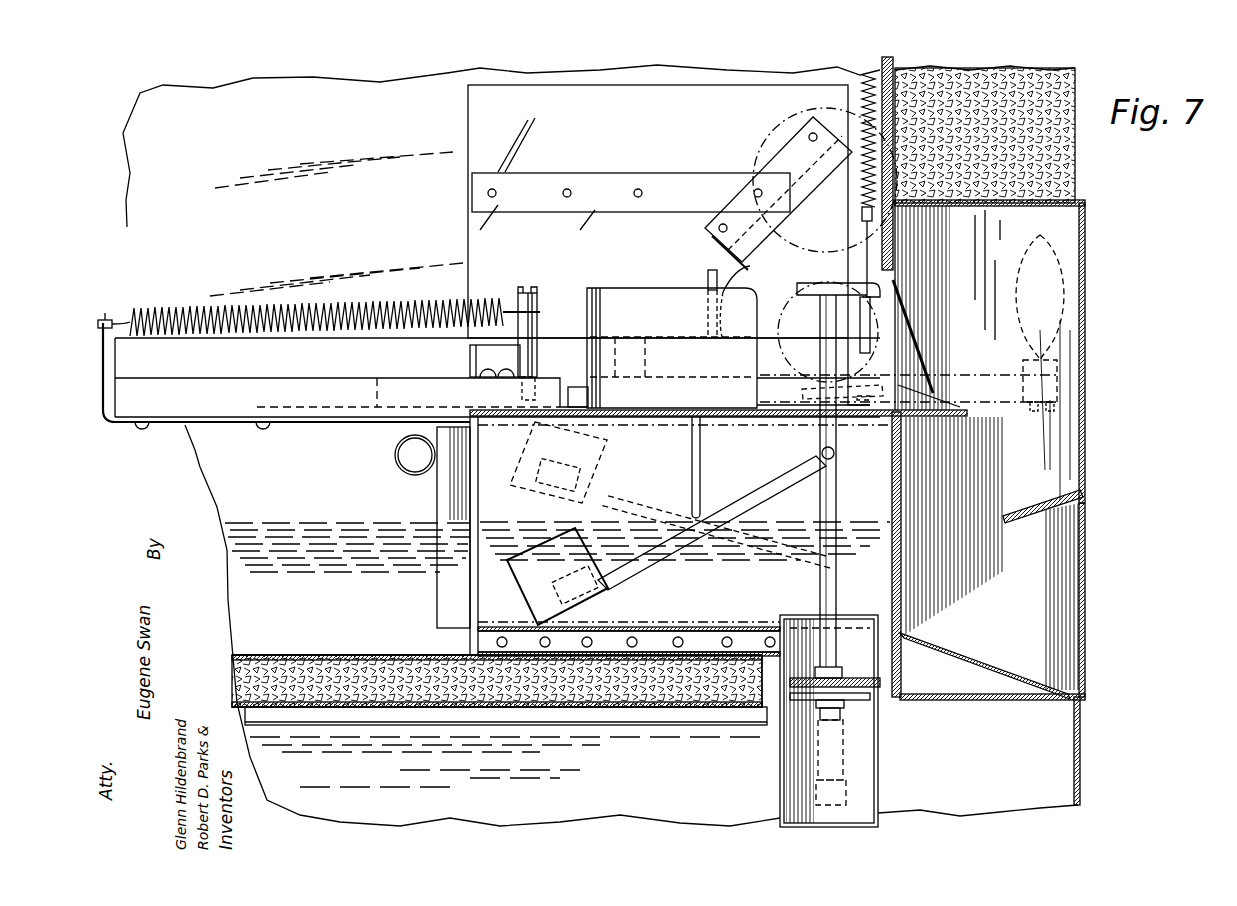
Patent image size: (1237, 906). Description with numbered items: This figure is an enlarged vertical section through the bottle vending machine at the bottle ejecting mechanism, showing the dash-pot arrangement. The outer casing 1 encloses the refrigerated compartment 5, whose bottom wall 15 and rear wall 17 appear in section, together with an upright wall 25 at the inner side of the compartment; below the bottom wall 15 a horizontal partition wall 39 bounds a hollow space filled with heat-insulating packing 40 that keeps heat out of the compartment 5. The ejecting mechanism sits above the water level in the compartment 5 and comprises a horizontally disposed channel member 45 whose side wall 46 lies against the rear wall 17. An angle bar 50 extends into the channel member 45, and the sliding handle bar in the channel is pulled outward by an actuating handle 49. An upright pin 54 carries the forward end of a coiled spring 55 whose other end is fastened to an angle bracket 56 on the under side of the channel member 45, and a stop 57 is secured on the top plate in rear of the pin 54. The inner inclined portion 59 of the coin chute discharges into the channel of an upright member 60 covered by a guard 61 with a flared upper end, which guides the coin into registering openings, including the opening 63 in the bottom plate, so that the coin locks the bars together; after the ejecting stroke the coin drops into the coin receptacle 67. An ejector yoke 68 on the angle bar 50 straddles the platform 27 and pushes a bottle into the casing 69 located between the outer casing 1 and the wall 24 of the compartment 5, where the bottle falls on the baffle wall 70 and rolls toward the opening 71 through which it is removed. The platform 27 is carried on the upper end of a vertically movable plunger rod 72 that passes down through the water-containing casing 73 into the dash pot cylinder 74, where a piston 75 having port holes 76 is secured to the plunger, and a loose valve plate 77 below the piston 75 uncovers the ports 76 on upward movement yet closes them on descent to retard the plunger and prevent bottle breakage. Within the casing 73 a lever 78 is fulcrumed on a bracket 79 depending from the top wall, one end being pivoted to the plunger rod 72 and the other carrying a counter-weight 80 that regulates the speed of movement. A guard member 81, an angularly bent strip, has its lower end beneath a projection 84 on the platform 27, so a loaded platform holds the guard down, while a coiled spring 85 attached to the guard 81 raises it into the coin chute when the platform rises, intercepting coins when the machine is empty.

The casing 1 is at (1078, 778).
The compartment 5 is at (631, 625).
The bottom wall 15 is at (327, 653).
The rear wall 17 is at (292, 102).
The wall 24 is at (900, 673).
The wall post 25 is at (883, 262).
The platform 27 is at (808, 285).
The partition wall 39 is at (643, 707).
The heat-insulating packing 40 is at (1076, 72).
The channel member 45 is at (210, 377).
The side wall 46 is at (491, 376).
The actuating handle 49 is at (1063, 273).
The angle bar 50 is at (577, 392).
The upright pin 54 is at (525, 287).
The coiled spring 55 is at (150, 312).
The angle bracket 56 is at (105, 313).
The stop 57 is at (470, 357).
The inner inclined portion 59 is at (738, 255).
The upright member 60 is at (708, 275).
The guard 61 is at (750, 266).
The opening 63 is at (870, 362).
The coin receptacle 67 is at (440, 510).
The ejector yoke 68 is at (617, 290).
The casing 69 is at (1085, 403).
The baffle wall 70 is at (1017, 515).
The opening 71 is at (1088, 612).
The plunger rod 72 is at (836, 500).
The casing 73 is at (468, 478).
The dash pot cylinder 74 is at (880, 762).
The piston 75 is at (860, 677).
The port holes 76 is at (805, 668).
The valve plate 77 is at (857, 703).
The lever 78 is at (750, 482).
The bracket 79 is at (692, 460).
The counter-weight 80 is at (545, 557).
The guard member 81 is at (855, 140).
The projection 84 is at (877, 325).
The coiled spring 85 is at (862, 110).